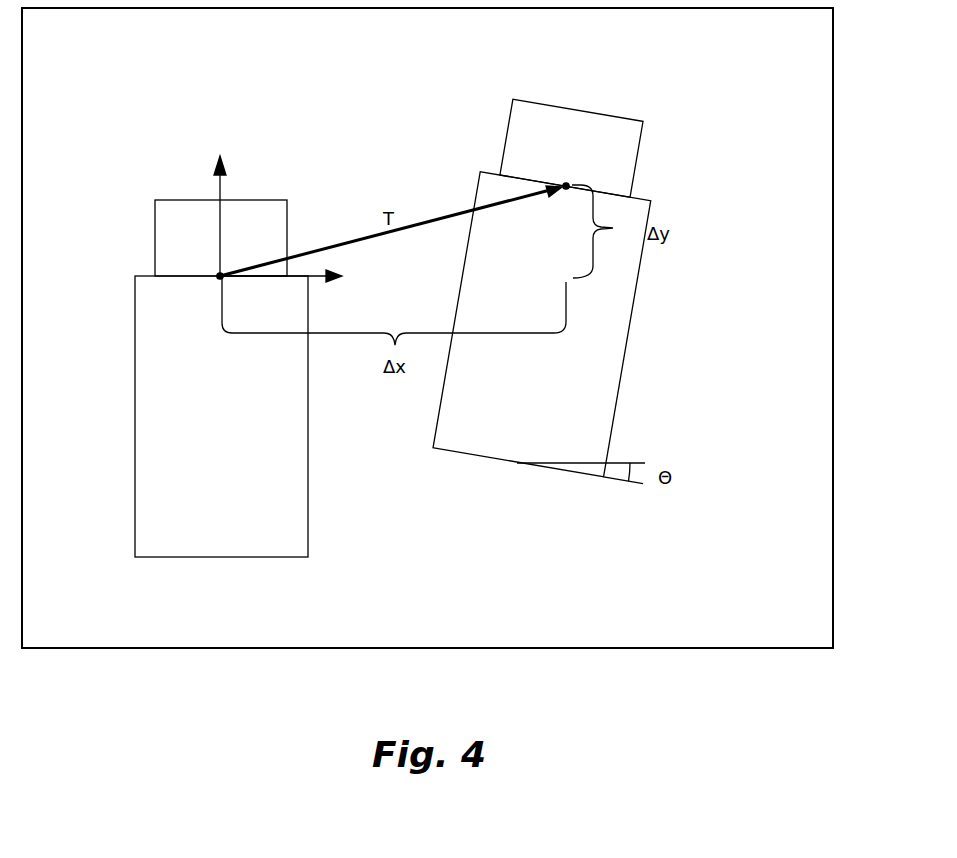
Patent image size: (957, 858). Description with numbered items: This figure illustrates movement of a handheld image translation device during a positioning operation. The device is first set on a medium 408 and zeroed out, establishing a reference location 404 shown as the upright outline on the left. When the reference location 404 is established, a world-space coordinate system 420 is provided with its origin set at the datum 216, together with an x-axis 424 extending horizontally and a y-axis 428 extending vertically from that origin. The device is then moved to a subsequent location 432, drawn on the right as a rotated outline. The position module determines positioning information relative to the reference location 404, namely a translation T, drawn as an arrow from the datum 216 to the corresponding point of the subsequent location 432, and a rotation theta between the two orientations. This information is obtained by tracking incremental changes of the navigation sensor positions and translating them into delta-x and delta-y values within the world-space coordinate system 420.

The medium 408 is at (60, 38).
The reference location 404 is at (113, 173).
The world-space coordinate system 420 is at (257, 209).
The y-axis 428 is at (192, 205).
The x-axis 424 is at (303, 299).
The datum 216 is at (220, 276).
The subsequent location 432 is at (600, 290).